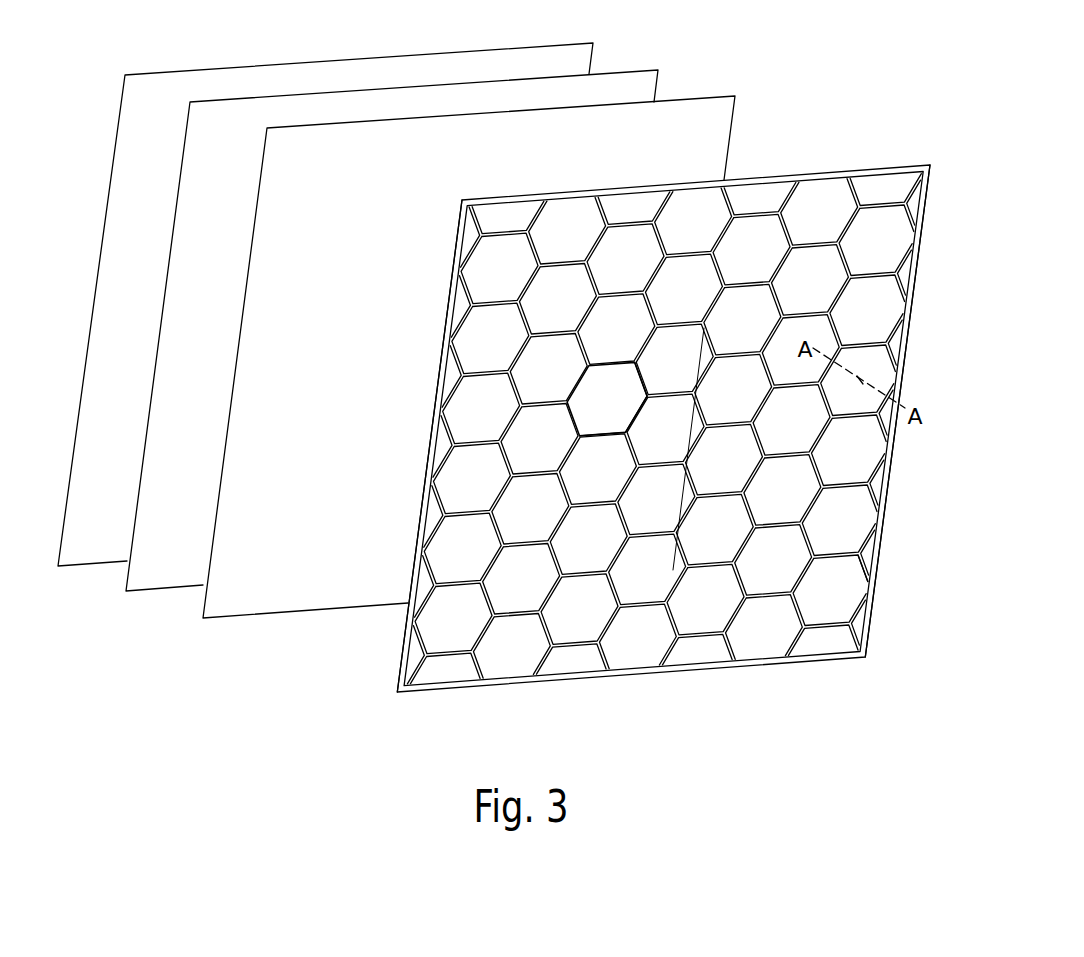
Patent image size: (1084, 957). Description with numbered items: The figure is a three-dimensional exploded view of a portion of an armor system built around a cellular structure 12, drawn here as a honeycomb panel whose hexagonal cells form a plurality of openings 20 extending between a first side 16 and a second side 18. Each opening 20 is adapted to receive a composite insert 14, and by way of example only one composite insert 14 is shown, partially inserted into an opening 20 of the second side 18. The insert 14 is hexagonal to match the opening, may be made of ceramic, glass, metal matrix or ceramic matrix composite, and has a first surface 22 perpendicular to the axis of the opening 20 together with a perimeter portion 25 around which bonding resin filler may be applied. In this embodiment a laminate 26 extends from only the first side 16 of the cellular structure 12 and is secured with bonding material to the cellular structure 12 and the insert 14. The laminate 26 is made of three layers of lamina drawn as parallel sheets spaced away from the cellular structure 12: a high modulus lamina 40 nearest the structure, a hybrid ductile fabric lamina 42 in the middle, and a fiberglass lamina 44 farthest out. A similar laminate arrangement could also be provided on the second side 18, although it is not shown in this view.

The cellular structure 12 is at (932, 167).
The composite insert 14 is at (633, 388).
The first side 16 is at (397, 694).
The second side 18 is at (870, 639).
The opening 20 is at (857, 585).
The first surface 22 is at (638, 413).
The perimeter portion 25 is at (610, 437).
The laminate 26 is at (426, 333).
The high modulus lamina 40 is at (736, 98).
The hybrid ductile fabric lamina 42 is at (658, 71).
The fiberglass lamina 44 is at (593, 46).